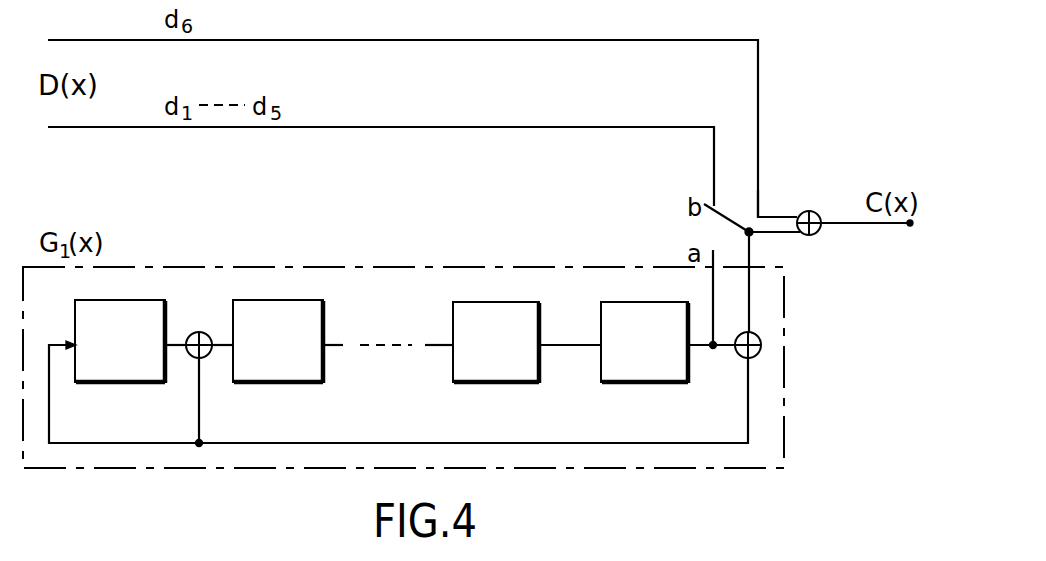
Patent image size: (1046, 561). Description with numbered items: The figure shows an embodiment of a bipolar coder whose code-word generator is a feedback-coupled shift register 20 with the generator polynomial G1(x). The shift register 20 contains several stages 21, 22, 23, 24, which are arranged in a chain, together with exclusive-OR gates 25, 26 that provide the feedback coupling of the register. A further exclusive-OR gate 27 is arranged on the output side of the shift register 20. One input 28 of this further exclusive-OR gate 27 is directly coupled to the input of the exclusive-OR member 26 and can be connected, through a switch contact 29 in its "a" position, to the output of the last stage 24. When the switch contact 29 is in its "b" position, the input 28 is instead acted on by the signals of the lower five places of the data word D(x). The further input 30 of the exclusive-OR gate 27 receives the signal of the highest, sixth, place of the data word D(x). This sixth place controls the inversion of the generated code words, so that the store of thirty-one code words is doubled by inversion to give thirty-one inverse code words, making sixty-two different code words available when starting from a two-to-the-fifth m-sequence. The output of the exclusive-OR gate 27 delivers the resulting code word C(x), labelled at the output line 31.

The feedback-coupled shift register 20 is at (786, 435).
The shift register stage 21 is at (143, 378).
The shift register stage 22 is at (303, 380).
The shift register stage 23 is at (518, 380).
The shift register stage 24 is at (673, 380).
The exclusive-OR gate 25 is at (199, 332).
The exclusive-OR gate 26 is at (761, 338).
The further exclusive-OR gate 27 is at (805, 212).
The input of exclusive-OR gate 28 is at (768, 234).
The switch contact 29 is at (730, 213).
The further input of exclusive-OR gate 30 is at (779, 215).
The output line C(x) 31 is at (910, 226).